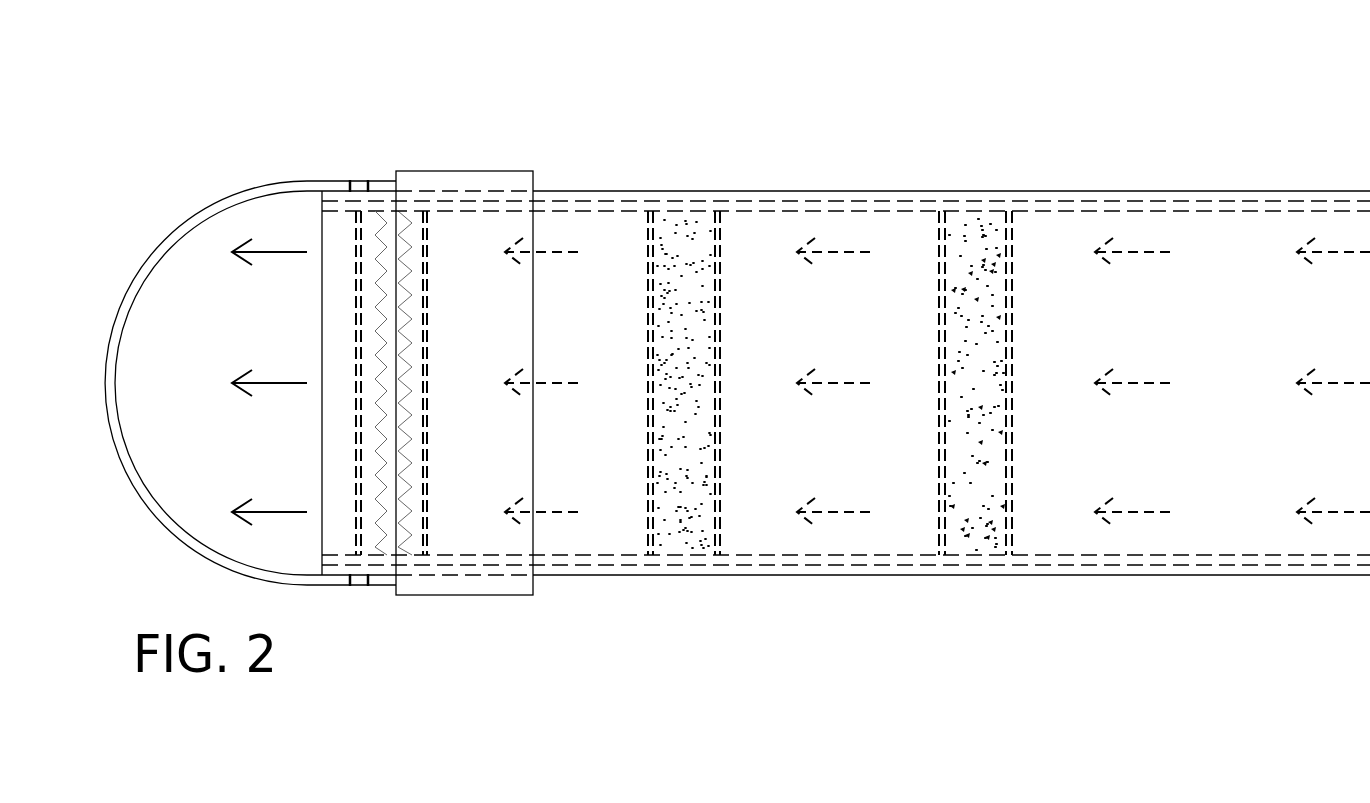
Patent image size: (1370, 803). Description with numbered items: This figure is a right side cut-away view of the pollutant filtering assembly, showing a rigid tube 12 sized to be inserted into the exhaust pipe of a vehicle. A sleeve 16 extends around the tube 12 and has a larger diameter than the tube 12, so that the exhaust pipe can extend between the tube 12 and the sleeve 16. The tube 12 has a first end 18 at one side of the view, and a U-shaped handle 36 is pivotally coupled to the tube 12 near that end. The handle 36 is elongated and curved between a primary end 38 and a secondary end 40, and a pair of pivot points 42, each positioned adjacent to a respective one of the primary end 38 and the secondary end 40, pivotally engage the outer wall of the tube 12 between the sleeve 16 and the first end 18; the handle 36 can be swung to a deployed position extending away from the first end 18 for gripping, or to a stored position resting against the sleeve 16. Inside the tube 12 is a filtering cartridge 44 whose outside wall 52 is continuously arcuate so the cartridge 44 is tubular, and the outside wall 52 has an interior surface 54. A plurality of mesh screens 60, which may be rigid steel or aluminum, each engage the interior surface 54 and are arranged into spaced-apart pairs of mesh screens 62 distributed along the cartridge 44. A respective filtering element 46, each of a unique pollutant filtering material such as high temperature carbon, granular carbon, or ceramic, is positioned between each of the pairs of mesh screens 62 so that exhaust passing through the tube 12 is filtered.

The tube 12 is at (829, 191).
The sleeve 16 is at (492, 172).
The first end 18 is at (322, 242).
The handle 36 is at (178, 228).
The primary end 38 is at (386, 190).
The secondary end 40 is at (391, 585).
The pivot points 42 is at (350, 186).
The filtering cartridge 44 is at (1207, 560).
The filtering elements 46 is at (375, 238).
The outside wall 52 is at (1278, 200).
The interior surface 54 is at (1165, 212).
The mesh screens 60 is at (720, 497).
The pairs of mesh screens 62 is at (645, 240).